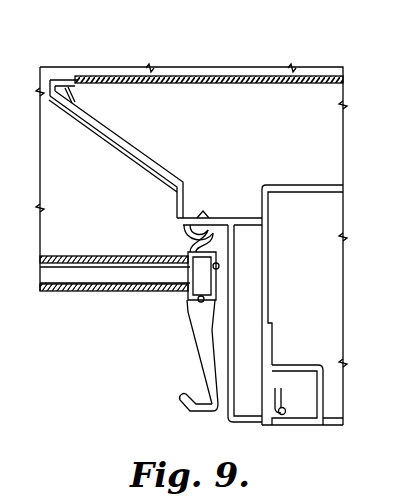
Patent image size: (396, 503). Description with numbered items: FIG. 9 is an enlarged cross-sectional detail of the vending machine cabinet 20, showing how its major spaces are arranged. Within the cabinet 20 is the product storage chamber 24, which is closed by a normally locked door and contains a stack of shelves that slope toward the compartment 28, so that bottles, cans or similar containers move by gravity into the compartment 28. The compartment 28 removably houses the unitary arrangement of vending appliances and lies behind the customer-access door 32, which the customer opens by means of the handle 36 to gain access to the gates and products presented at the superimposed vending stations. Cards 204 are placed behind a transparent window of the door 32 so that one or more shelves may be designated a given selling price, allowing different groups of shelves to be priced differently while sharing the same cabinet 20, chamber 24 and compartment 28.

The cabinet 20 is at (222, 53).
The cards 204 is at (74, 94).
The compartment 28 is at (155, 166).
The product storage chamber 24 is at (285, 305).
The customer-access door 32 is at (91, 292).
The handle 36 is at (191, 412).